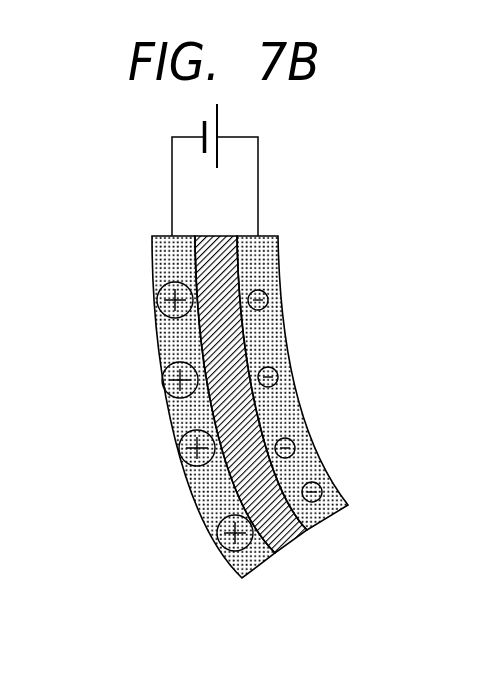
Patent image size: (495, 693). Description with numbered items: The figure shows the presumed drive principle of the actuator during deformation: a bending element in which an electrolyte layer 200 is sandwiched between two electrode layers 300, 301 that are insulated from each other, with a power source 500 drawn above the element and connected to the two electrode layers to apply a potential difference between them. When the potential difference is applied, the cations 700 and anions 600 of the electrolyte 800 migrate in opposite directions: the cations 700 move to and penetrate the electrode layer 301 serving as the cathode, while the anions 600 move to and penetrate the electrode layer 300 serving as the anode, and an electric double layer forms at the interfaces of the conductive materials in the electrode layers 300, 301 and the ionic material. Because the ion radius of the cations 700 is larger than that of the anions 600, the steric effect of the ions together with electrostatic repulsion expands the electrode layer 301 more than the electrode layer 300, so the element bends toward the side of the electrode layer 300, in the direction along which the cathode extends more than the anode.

The power source (battery) 500 is at (208, 156).
The electrode layer 301 is at (178, 253).
The electrolyte layer 200 is at (222, 327).
The electrode layer 300 is at (279, 410).
The anions 600 is at (247, 378).
The cations 700 is at (220, 513).
The electrolyte 800 is at (172, 416).